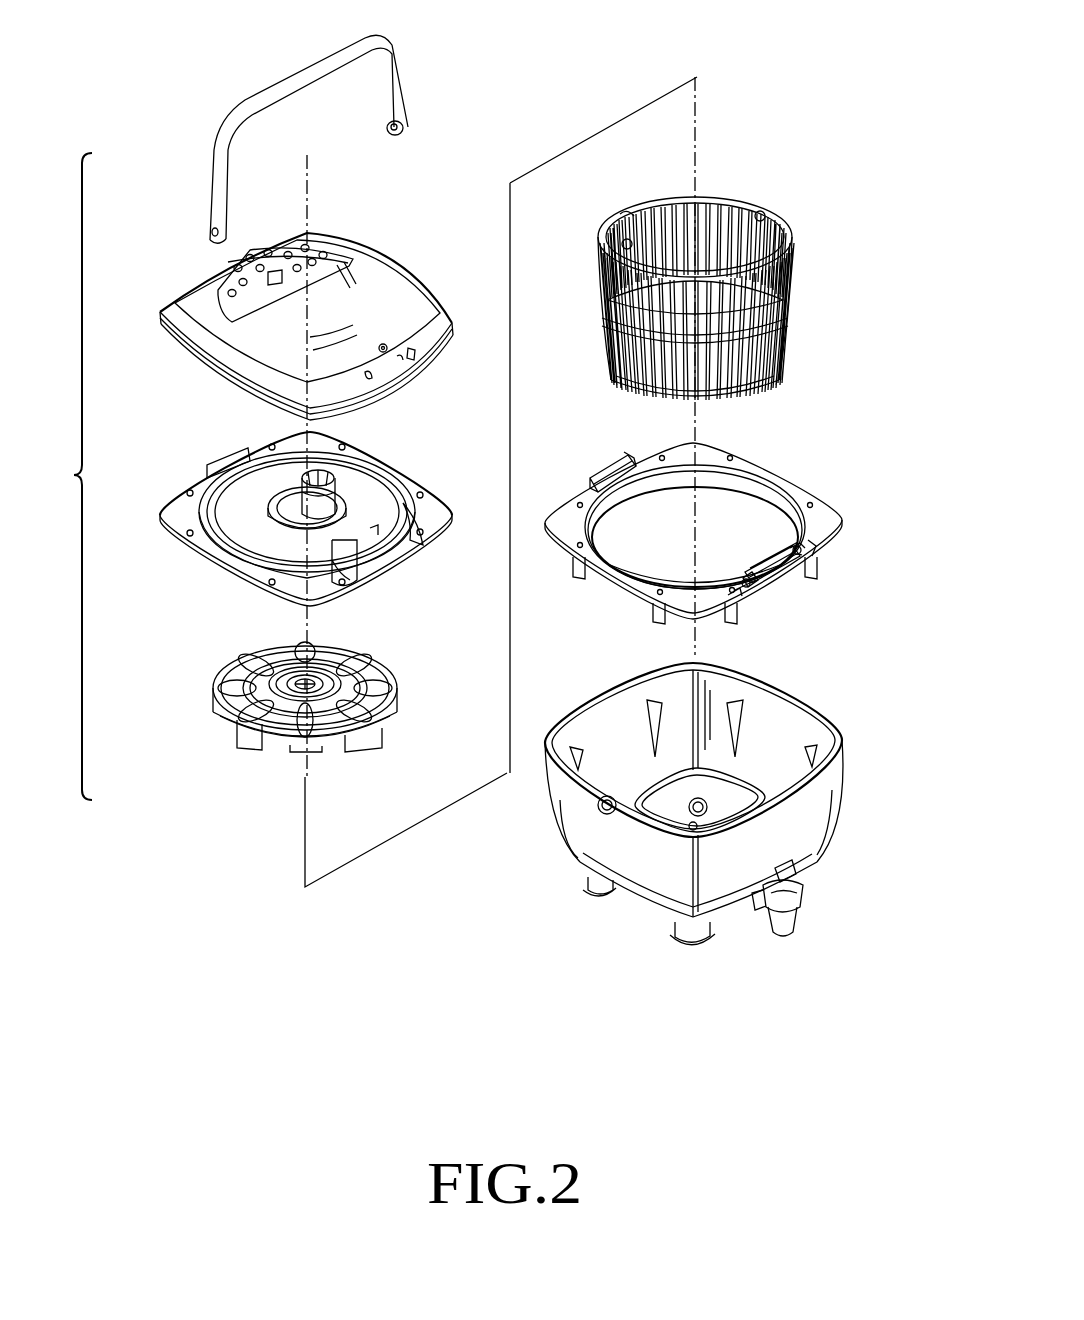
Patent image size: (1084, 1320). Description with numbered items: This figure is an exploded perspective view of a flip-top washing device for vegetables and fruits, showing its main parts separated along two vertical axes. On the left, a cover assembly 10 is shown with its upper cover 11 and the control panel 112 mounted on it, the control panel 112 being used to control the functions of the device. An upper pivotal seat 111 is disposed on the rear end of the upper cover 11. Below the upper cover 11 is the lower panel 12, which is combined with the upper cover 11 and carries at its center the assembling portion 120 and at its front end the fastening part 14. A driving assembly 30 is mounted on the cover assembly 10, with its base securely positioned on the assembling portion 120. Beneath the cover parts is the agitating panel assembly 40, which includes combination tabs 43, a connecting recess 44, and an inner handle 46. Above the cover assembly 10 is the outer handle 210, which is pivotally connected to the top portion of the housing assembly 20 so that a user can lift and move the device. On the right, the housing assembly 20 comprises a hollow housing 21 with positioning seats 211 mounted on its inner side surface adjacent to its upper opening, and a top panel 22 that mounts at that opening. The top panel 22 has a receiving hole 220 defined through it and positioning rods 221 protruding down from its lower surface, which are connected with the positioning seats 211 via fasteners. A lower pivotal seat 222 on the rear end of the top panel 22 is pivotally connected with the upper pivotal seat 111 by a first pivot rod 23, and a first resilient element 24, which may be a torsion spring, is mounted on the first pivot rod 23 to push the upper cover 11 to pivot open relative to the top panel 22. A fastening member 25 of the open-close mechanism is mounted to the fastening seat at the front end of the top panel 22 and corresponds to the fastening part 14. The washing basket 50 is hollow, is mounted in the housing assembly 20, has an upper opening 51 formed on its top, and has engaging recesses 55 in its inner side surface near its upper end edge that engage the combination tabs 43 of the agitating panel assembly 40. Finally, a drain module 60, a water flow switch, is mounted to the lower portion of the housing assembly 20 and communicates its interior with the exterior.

The cover assembly 10 is at (380, 242).
The upper cover 11 is at (198, 302).
The upper pivotal seat 111 is at (404, 356).
The control panel 112 is at (225, 268).
The lower panel 12 is at (175, 520).
The assembling portion 120 is at (270, 510).
The fastening part 14 is at (228, 457).
The driving assembly 30 is at (330, 478).
The agitating panel assembly 40 is at (200, 726).
The combination tabs 43 is at (252, 745).
The connecting recess 44 is at (318, 680).
The inner handle 46 is at (322, 670).
The housing assembly 20 is at (693, 814).
The housing 21 is at (830, 795).
The positioning seats 211 is at (567, 770).
The outer handle 210 is at (298, 78).
The top panel 22 is at (842, 522).
The receiving hole 220 is at (738, 470).
The positioning rods 221 is at (654, 605).
The lower pivotal seat 222 is at (793, 566).
The first pivot rod 23 is at (800, 545).
The first resilient element 24 is at (762, 592).
The fastening member 25 is at (605, 463).
The washing basket 50 is at (712, 269).
The upper opening 51 is at (717, 205).
The engaging recesses 55 is at (627, 222).
The drain module 60 is at (797, 905).